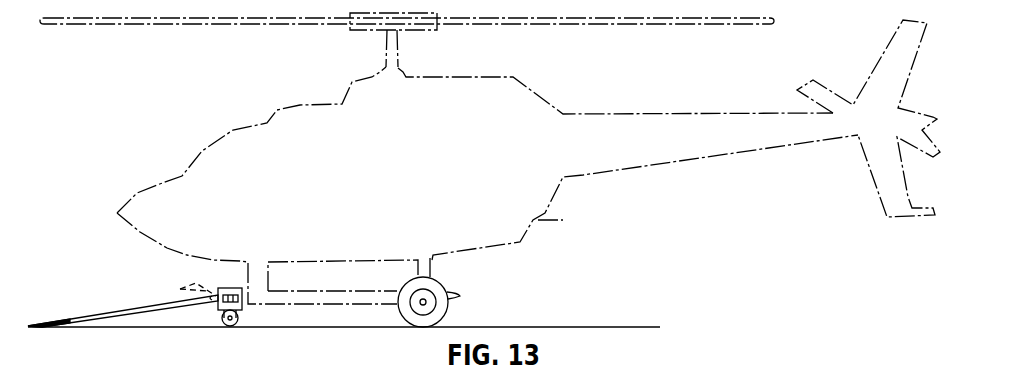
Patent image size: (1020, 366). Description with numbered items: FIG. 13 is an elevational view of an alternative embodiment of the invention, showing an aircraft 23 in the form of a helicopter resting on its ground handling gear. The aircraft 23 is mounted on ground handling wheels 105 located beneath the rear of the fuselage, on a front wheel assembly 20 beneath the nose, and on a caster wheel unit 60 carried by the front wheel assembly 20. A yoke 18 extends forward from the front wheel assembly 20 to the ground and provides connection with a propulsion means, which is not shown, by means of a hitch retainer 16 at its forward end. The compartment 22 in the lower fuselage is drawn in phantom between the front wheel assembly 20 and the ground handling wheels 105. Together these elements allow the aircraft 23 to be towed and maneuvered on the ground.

The hitch retainer 16 is at (50, 294).
The yoke 18 is at (103, 298).
The front wheel assembly 20 is at (230, 288).
The cargo compartment 22 is at (307, 294).
The aircraft 23 is at (565, 222).
The caster wheel unit 60 is at (240, 318).
The ground handling wheels 105 is at (440, 290).